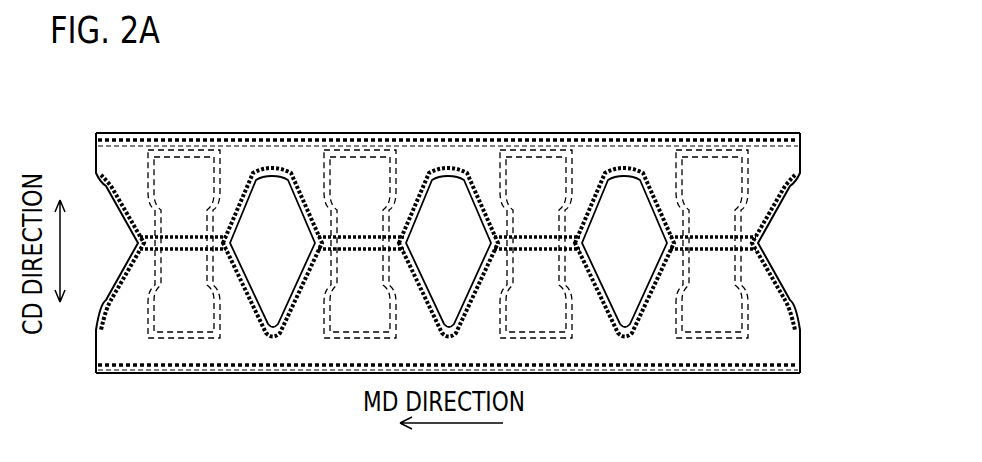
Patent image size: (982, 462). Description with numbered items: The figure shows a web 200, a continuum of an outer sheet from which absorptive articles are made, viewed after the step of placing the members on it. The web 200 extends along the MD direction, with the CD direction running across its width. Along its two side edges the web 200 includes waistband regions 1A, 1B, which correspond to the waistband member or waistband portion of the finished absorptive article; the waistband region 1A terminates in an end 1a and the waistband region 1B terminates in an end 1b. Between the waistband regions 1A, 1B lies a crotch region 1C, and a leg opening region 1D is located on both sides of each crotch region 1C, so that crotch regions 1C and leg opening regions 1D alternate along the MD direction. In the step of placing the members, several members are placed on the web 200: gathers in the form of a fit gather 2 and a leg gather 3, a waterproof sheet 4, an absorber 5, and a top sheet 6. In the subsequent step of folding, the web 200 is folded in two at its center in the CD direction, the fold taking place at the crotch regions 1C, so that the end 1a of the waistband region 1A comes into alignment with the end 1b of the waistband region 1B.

The web 200 is at (806, 95).
The waistband region 1A is at (817, 158).
The waistband region 1B is at (817, 356).
The end of the waistband region 1a is at (580, 133).
The end of the waistband region 1b is at (557, 375).
The crotch region 1C is at (714, 311).
The leg opening region 1D is at (627, 296).
The fit gather 2 is at (478, 138).
The leg gather 3 is at (427, 176).
The waterproof sheet 4 is at (324, 156).
The absorber 5 is at (722, 168).
The top sheet 6 is at (226, 152).